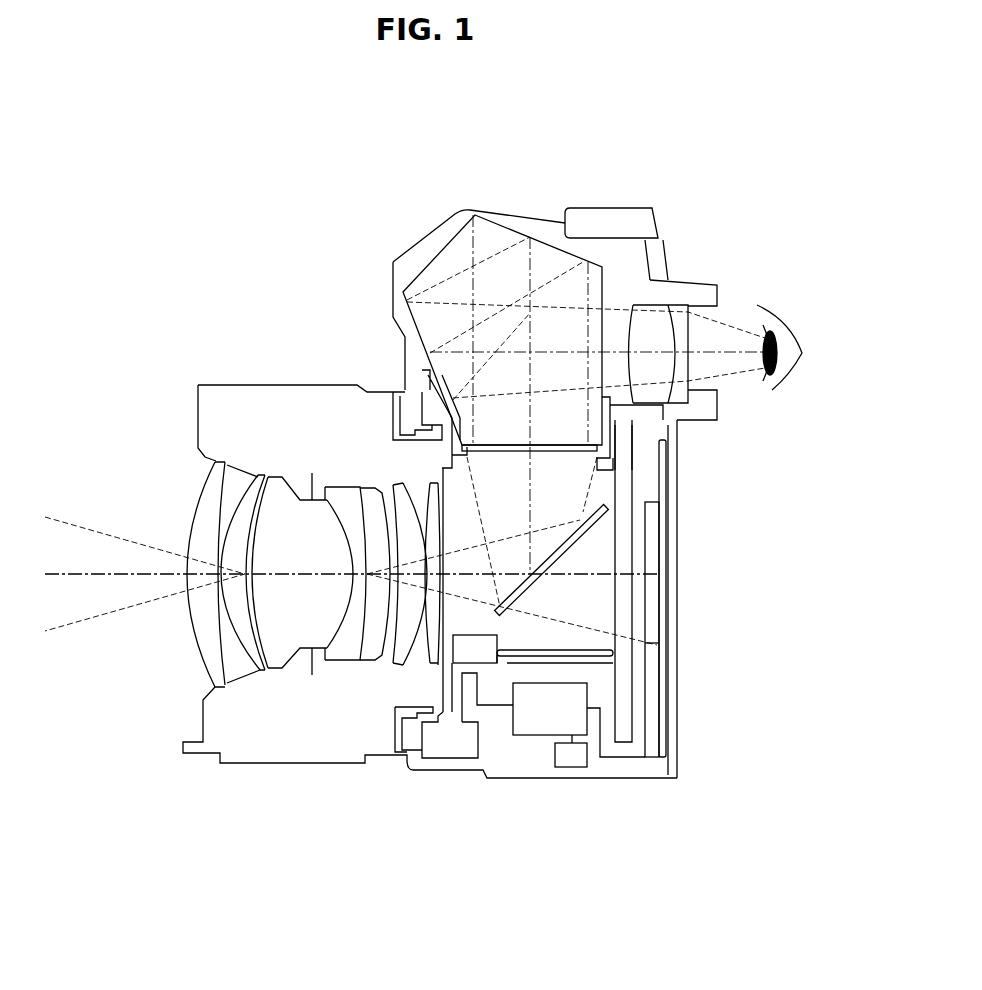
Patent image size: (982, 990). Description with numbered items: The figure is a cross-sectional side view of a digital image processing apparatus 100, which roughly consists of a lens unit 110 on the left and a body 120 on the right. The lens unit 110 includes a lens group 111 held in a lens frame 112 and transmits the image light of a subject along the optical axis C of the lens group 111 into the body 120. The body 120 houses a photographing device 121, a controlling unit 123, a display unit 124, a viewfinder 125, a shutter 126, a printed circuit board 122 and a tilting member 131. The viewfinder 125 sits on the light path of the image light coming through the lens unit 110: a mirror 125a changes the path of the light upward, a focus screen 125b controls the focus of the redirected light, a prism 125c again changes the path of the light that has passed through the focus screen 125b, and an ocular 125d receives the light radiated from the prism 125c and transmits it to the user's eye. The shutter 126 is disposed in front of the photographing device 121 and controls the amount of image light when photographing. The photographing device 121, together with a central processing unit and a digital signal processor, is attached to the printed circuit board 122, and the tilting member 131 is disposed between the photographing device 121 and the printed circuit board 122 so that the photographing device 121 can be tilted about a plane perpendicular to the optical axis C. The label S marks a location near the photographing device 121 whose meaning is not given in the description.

The digital image processing apparatus 100 is at (205, 250).
The lens unit 110 is at (313, 481).
The lens group 111 is at (296, 470).
The lens frame 112 is at (312, 402).
The body 120 is at (646, 787).
The photographing device 121 is at (645, 600).
The printed circuit board 122 is at (667, 725).
The controlling unit 123 is at (537, 728).
The display unit 124 is at (653, 248).
The viewfinder 125 is at (594, 381).
The mirror 125a is at (567, 543).
The focus screen 125b is at (555, 450).
The prism 125c is at (442, 278).
The ocular 125d is at (683, 337).
The shutter 126 is at (628, 458).
The tilting member 131 is at (650, 506).
The shutter S is at (572, 632).
The optical axis C is at (92, 578).